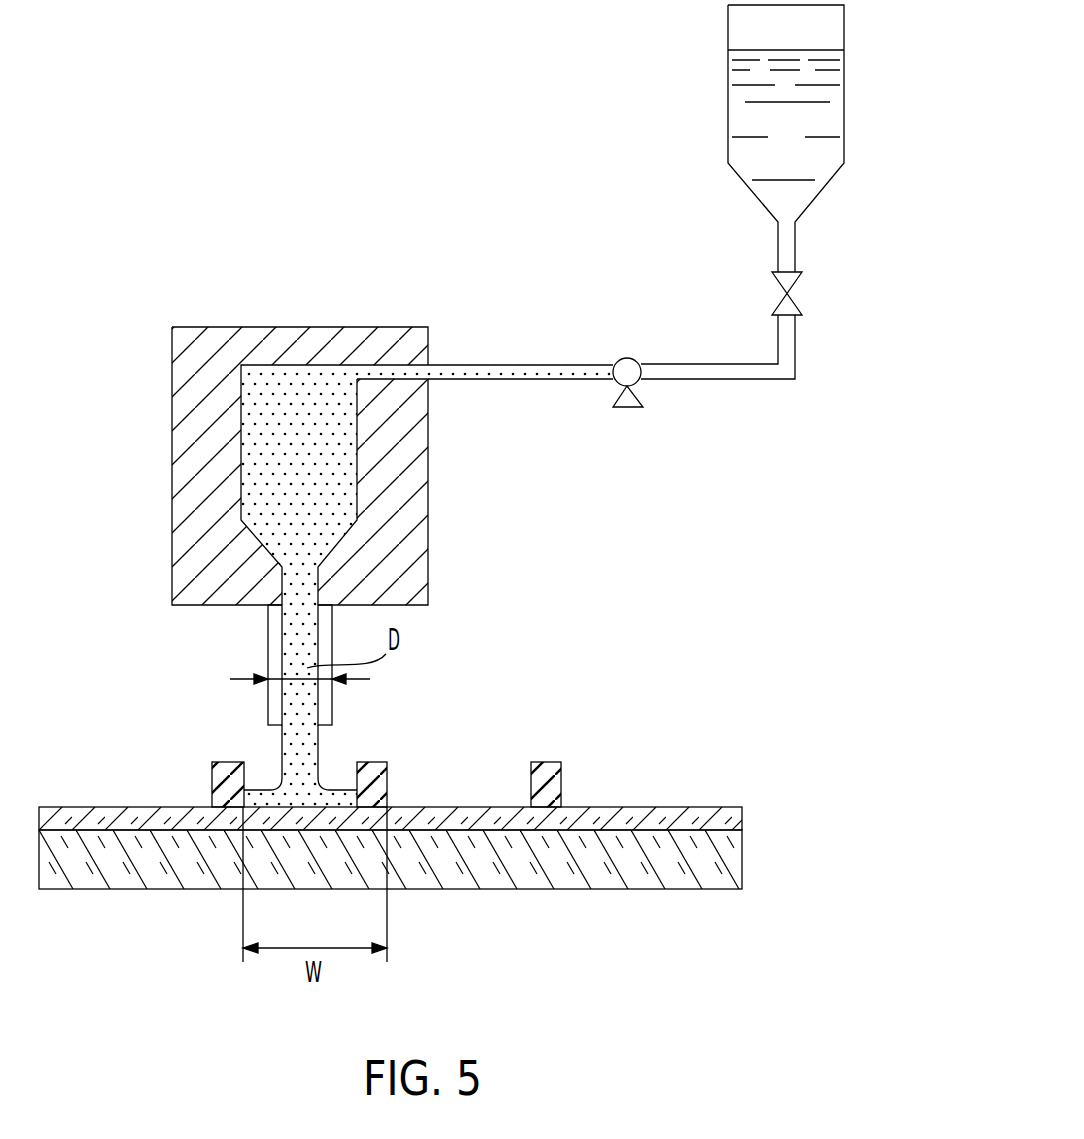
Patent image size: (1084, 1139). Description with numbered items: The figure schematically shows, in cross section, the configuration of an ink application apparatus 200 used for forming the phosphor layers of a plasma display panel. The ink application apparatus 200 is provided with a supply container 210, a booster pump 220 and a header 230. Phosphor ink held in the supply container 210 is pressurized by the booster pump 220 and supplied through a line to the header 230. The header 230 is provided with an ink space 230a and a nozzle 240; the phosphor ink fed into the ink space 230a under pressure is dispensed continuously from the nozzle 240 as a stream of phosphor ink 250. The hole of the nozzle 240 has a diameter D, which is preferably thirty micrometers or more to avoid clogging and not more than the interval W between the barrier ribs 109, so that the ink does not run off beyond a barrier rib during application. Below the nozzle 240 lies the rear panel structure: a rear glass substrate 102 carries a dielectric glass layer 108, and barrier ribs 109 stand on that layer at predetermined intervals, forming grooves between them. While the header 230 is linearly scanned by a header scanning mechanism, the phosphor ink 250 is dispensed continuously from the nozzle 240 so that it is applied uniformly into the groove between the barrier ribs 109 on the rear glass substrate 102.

The ink application apparatus 200 is at (250, 226).
The supply container 210 is at (836, 118).
The booster pump 220 is at (626, 358).
The header 230 is at (182, 549).
The ink space 230a is at (262, 437).
The nozzle 240 is at (270, 655).
The phosphor ink 250 is at (333, 770).
The barrier ribs 109 is at (212, 787).
The dielectric glass layer 108 is at (743, 811).
The rear glass substrate 102 is at (743, 865).